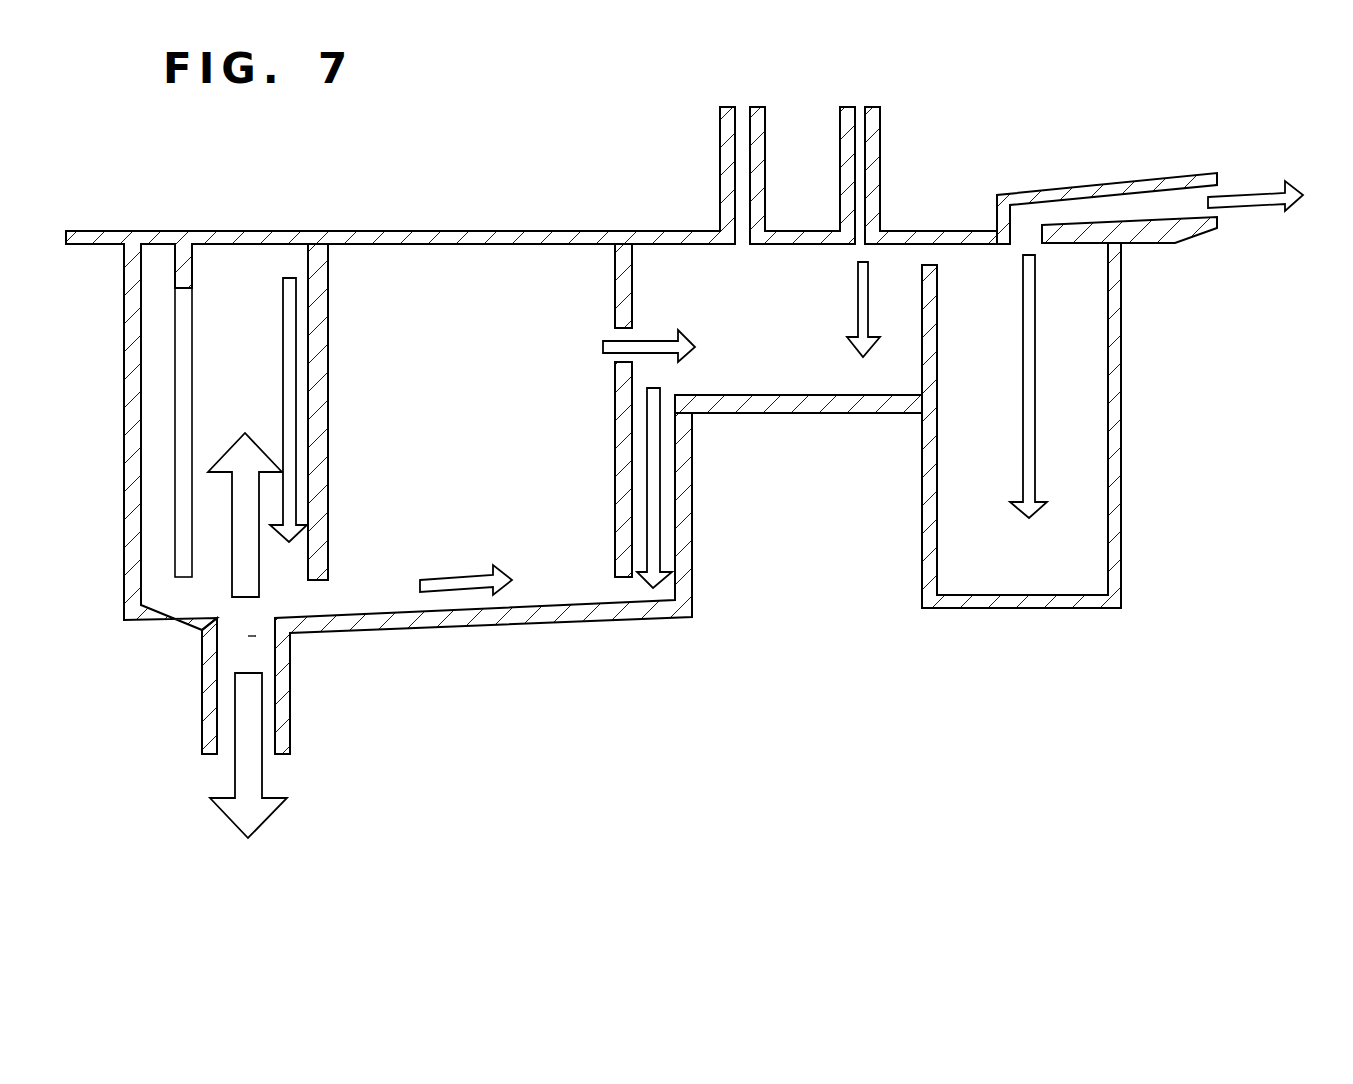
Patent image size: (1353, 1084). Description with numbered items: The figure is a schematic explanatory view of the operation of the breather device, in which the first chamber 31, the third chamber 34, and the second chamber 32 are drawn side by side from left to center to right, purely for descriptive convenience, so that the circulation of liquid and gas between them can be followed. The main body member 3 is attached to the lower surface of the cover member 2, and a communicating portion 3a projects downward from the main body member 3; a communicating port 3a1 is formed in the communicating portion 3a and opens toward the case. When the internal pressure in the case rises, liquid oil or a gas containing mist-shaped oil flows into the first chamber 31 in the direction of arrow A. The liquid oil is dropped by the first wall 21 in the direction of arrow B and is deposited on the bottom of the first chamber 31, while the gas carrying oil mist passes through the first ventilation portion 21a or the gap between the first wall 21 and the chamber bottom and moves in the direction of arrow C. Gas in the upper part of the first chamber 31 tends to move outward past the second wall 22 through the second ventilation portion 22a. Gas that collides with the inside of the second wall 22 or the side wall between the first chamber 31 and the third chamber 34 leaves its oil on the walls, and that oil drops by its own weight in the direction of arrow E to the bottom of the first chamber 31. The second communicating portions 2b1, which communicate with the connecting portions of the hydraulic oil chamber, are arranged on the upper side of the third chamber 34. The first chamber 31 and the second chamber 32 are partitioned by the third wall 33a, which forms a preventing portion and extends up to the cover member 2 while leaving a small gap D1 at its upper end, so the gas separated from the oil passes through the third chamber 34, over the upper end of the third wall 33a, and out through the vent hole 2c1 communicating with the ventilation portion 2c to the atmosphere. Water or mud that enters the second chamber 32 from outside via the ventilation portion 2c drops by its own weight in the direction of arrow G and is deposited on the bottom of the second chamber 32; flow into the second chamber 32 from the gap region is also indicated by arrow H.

The cover member 2 is at (227, 238).
The first wall 21 is at (318, 457).
The first ventilation portion 21a is at (185, 362).
The main body member 3 is at (678, 610).
The communicating portion 3a is at (283, 727).
The communicating port 3a1 is at (248, 635).
The second wall 22 is at (628, 252).
The second ventilation portion 22a is at (615, 333).
The second communicating portions 2b1 is at (860, 240).
The first chamber 31 is at (558, 383).
The third chamber 34 is at (780, 345).
The third wall 33a is at (922, 355).
The second chamber 32 is at (1093, 415).
The small gap D1 is at (933, 255).
The ventilation portion 2c is at (1117, 182).
The vent hole 2c1 is at (1025, 238).
The arrow A is at (245, 515).
The arrow B is at (283, 410).
The arrow C is at (466, 572).
The arrow E is at (654, 474).
The arrow G is at (1024, 386).
The flow H is at (856, 309).